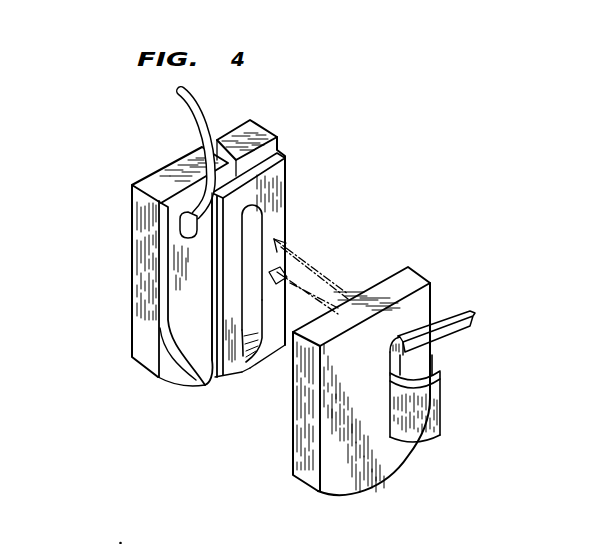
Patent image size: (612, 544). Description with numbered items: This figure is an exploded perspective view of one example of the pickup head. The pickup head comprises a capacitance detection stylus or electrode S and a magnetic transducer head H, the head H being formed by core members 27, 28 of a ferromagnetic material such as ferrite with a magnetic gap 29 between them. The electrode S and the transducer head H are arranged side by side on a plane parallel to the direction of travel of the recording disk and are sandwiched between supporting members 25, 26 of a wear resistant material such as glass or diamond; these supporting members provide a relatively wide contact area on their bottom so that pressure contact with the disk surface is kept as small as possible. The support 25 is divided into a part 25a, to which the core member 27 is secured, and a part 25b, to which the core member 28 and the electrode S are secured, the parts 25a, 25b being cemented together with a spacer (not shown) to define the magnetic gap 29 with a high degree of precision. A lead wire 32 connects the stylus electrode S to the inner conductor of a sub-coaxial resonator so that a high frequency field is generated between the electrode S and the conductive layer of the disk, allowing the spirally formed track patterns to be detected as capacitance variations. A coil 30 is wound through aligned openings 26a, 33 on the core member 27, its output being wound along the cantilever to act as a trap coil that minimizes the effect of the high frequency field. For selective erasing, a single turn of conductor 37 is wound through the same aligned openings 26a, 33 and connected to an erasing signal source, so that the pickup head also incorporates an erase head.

The supporting member 25 is at (131, 213).
The part of support 25a is at (243, 124).
The part of support 25b is at (160, 182).
The supporting member 26 is at (407, 280).
The opening 26a is at (392, 358).
The core member 27 is at (262, 232).
The core member 28 is at (232, 237).
The magnetic gap 29 is at (252, 362).
The coil 30 is at (446, 399).
The lead wire 32 is at (177, 97).
The opening 33 is at (263, 289).
The conductor 37 is at (453, 336).
The capacitance detection stylus or electrode S is at (183, 312).
The magnetic transducer head H is at (326, 158).